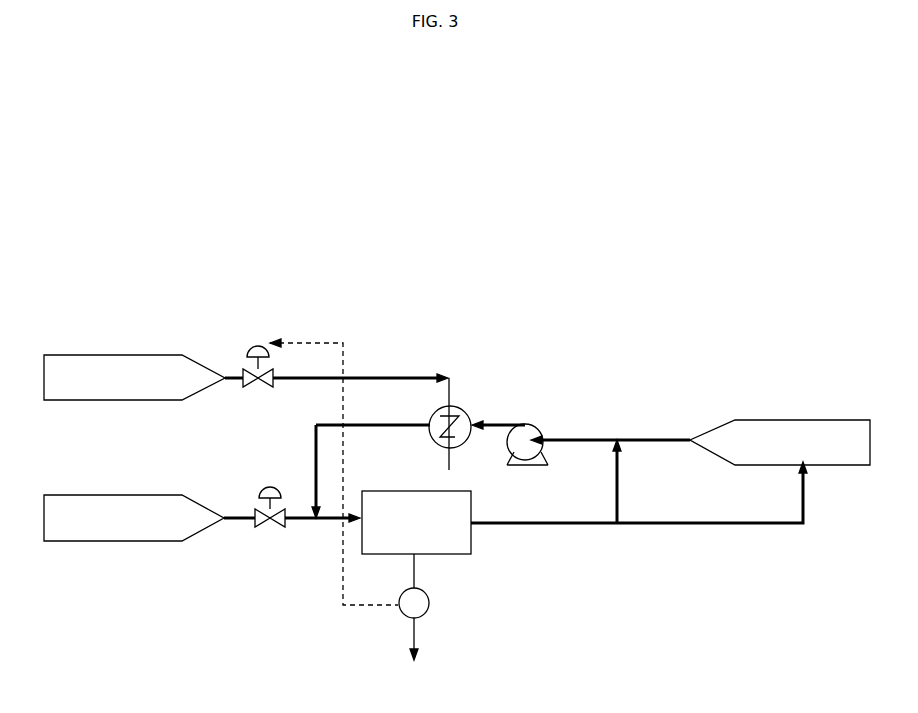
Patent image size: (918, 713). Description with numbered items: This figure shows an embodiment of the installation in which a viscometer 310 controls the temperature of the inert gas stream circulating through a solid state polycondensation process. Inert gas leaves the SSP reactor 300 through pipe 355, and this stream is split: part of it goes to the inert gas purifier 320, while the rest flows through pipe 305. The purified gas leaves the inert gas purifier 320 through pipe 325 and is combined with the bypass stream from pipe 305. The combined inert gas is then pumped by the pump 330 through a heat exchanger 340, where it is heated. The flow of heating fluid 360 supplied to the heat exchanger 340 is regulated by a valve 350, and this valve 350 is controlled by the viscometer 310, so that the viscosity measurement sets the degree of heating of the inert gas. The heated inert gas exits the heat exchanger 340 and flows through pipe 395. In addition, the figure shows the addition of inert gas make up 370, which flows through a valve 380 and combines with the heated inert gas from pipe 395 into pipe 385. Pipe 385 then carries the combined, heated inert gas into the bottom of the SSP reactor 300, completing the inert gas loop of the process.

The SSP reactor 300 is at (454, 534).
The pipe 305 is at (630, 497).
The viscometer 310 is at (440, 607).
The inert gas purifier 320 is at (785, 432).
The pipe 325 is at (632, 430).
The pump 330 is at (530, 415).
The heat exchanger 340 is at (462, 395).
The valve 350 is at (258, 335).
The pipe 355 is at (717, 540).
The heating fluid 360 is at (138, 368).
The inert gas make up 370 is at (122, 530).
The valve 380 is at (273, 536).
The pipe 385 is at (308, 530).
The pipe 395 is at (383, 415).